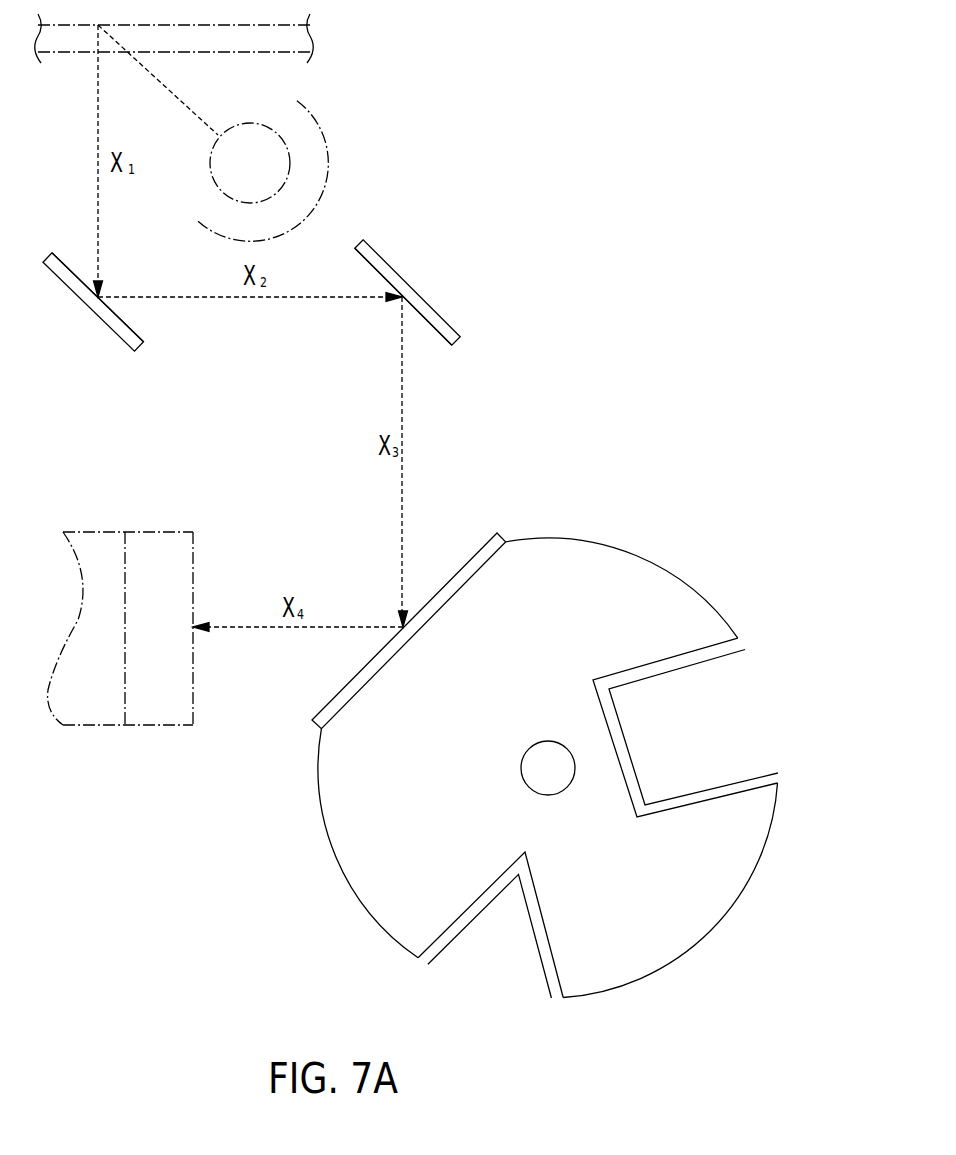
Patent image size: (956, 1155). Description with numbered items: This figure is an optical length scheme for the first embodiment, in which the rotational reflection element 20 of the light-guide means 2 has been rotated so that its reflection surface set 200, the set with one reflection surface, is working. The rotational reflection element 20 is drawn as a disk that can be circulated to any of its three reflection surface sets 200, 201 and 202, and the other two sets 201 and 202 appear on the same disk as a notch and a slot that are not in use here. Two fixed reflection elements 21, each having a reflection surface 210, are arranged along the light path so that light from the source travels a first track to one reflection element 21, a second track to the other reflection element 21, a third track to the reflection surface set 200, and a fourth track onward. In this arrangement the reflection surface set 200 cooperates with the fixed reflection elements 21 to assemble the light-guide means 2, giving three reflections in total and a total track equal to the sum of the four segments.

The light-guide means 2 is at (652, 252).
The reflection elements 21 is at (102, 318).
The reflection surface 210 is at (125, 320).
The rotational reflection element 20 is at (677, 600).
The reflection surface set 200 is at (340, 667).
The reflection surface set 201 is at (502, 936).
The reflection surface set 202 is at (686, 725).